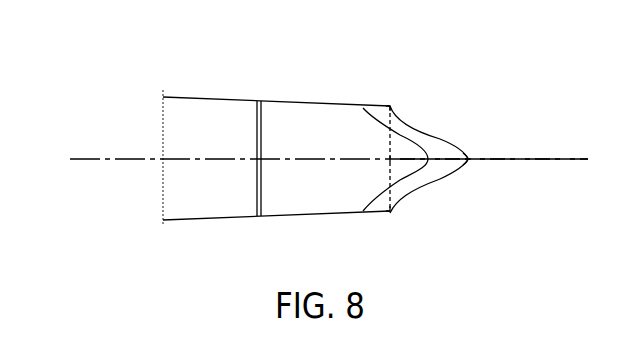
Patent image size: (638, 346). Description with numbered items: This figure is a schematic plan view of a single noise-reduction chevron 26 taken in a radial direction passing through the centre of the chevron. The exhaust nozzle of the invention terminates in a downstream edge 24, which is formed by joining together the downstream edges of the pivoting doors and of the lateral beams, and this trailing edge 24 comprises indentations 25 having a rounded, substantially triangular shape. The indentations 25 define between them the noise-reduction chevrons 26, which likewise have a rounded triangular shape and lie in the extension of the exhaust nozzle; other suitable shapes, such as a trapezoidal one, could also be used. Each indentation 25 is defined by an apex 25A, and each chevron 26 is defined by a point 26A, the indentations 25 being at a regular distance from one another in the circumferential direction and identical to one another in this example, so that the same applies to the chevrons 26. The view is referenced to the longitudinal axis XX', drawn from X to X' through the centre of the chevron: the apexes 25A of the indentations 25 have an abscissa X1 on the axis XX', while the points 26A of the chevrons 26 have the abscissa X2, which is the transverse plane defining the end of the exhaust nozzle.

The downstream edge 24 is at (407, 185).
The indentation 25 is at (407, 122).
The apex 25A is at (390, 106).
The noise-reduction chevron 26 is at (432, 143).
The point 26A is at (468, 159).
The axis X is at (329, 144).
The axis X' is at (494, 144).
The abscissa X1 is at (390, 160).
The abscissa X2 is at (468, 159).